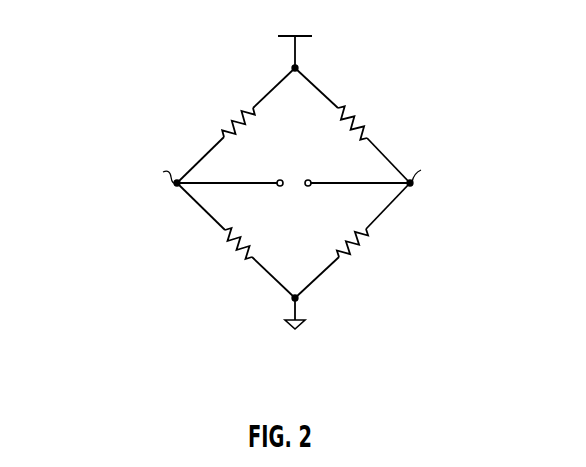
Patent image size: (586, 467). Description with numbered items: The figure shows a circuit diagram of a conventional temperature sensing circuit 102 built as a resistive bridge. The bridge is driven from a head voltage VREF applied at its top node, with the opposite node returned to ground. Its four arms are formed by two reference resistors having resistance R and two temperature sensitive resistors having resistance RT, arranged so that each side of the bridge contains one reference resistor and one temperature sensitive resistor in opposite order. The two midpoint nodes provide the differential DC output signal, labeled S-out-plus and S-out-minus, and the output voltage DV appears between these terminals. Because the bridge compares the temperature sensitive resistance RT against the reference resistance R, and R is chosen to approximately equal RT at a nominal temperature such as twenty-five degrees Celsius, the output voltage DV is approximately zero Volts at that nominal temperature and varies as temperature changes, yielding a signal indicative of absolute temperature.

The temperature sensing circuit 102 is at (113, 64).
The resistance of reference resistors R is at (293, 183).
The resistance of temperature sensitive resistors RT is at (293, 183).
The head voltage of the bridge circuit VREF is at (295, 39).
The output voltage DV is at (293, 167).